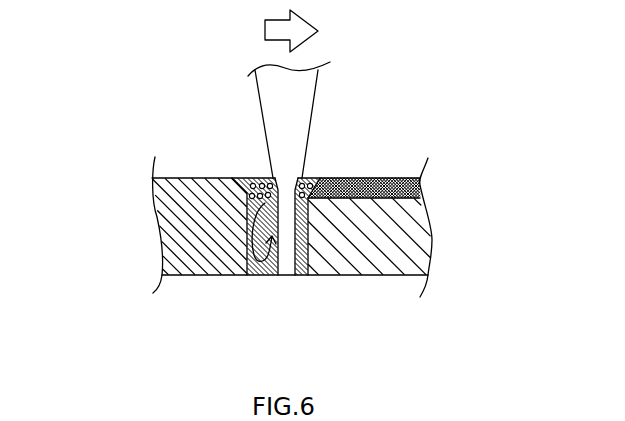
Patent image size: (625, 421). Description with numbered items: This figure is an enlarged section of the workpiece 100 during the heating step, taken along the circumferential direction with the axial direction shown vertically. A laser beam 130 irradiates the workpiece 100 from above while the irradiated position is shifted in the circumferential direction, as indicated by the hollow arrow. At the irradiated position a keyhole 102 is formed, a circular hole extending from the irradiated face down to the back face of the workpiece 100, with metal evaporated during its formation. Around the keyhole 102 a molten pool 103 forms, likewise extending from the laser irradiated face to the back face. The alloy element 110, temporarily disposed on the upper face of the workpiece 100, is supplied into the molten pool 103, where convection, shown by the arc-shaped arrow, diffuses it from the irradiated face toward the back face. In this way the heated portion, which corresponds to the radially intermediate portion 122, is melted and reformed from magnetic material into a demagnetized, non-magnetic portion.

The workpiece 100 is at (386, 257).
The keyhole 102 is at (285, 265).
The molten pool 103 is at (255, 178).
The alloy element 110 is at (232, 178).
The radially intermediate portion 122 is at (181, 182).
The laser beam 130 is at (302, 98).